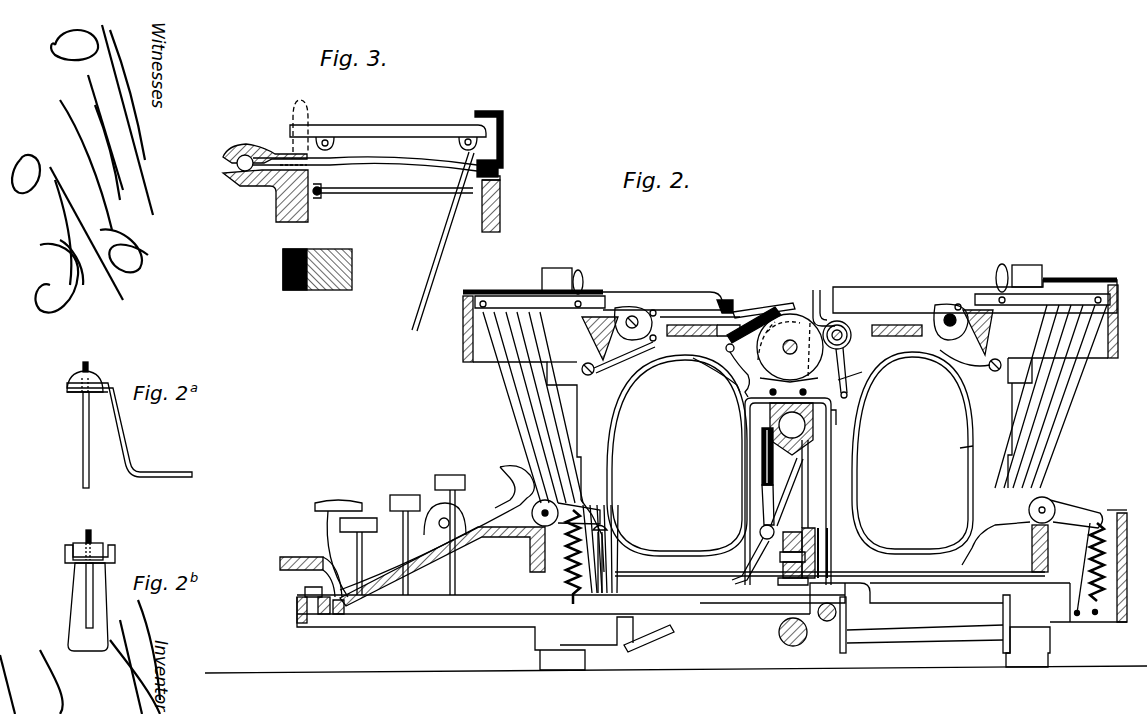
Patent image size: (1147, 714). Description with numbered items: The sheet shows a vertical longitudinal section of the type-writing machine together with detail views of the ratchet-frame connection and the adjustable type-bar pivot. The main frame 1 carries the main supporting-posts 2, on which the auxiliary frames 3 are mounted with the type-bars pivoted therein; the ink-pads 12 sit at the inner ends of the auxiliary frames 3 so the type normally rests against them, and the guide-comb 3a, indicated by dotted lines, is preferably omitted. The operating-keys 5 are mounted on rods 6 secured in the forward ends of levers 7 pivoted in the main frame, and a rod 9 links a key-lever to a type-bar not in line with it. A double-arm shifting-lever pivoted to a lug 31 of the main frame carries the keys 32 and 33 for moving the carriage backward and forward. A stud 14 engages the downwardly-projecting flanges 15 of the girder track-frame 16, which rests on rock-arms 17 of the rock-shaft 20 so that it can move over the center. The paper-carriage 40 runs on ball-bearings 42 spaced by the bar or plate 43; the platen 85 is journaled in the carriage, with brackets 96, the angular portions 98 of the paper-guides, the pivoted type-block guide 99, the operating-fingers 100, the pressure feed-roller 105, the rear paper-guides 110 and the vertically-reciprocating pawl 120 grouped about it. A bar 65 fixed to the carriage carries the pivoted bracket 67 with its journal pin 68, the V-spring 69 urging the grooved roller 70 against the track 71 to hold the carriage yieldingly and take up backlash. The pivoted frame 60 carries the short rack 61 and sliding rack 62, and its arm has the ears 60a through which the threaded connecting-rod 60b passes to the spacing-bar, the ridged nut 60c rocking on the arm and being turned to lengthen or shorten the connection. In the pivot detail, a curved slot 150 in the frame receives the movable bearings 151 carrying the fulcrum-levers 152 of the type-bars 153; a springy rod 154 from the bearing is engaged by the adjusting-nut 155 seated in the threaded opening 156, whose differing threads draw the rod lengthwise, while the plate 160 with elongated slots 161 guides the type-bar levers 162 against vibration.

In FIG. 2, the main frame 1 is at (560, 650).
In FIG. 2, the main supporting-posts 2 is at (566, 407).
In FIG. 3, the auxiliary frame 3 is at (262, 180).
In FIG. 2, the auxiliary frame 3 is at (667, 300).
In FIG. 3, the guide-comb 3a is at (299, 104).
In FIG. 2, the guide-comb 3a is at (1001, 270).
In FIG. 2, the operating-keys 5 is at (440, 478).
In FIG. 2, the rods 6 is at (355, 572).
In FIG. 2, the levers 7 is at (712, 607).
In FIG. 2, the rod 9 is at (612, 522).
In FIG. 2, the ink-pads 12 is at (680, 337).
In FIG. 2, the stud 14 is at (753, 392).
In FIG. 2, the downwardly-projecting flanges 15 is at (853, 432).
In FIG. 2, the girder track-frame 16 is at (800, 460).
In FIG. 2, the rock-arms 17 is at (810, 480).
In FIG. 2, the rock-shaft 20 is at (793, 646).
In FIG. 2, the lug 31 is at (435, 545).
In FIG. 2, the key 32 is at (335, 500).
In FIG. 2, the key 33 is at (392, 540).
In FIG. 2, the paper-carriage 40 is at (765, 412).
In FIG. 2, the ball-bearings 42 is at (779, 428).
In FIG. 2, the bar or plate 43 is at (848, 397).
In FIG. 2A, the pivoted frame 60 is at (180, 474).
In FIG. 2B, the pivoted frame 60 is at (93, 645).
In FIG. 2, the pivoted frame 60 is at (746, 556).
In FIG. 2A, the upwardly-bent ears or lugs 60a is at (100, 380).
In FIG. 2B, the upwardly-bent ears or lugs 60a is at (140, 534).
In FIG. 2, the upwardly-bent ears or lugs 60a is at (607, 530).
In FIG. 2A, the threaded connecting-rod 60b is at (82, 473).
In FIG. 2B, the threaded connecting-rod 60b is at (85, 605).
In FIG. 2, the threaded connecting-rod 60b is at (603, 552).
In FIG. 2A, the nut 60c is at (72, 380).
In FIG. 2B, the nut 60c is at (96, 545).
In FIG. 2, the short rack 61 is at (760, 450).
In FIG. 2, the second sliding short rack 62 is at (762, 482).
In FIG. 2, the bar 65 is at (829, 521).
In FIG. 2, the bracket 67 is at (808, 578).
In FIG. 2, the journal pin or screw 68 is at (790, 578).
In FIG. 2, the V-spring 69 is at (817, 556).
In FIG. 2, the grooved roller 70 is at (790, 580).
In FIG. 2, the track 71 is at (803, 532).
In FIG. 2, the main paper-platen 85 is at (790, 348).
In FIG. 2, the brackets 96 is at (752, 368).
In FIG. 2, the angular portions 98 is at (700, 386).
In FIG. 2, the pivoted type-block guide 99 is at (763, 297).
In FIG. 2, the operating-fingers 100 is at (777, 308).
In FIG. 2, the pressure feed-roller 105 is at (848, 325).
In FIG. 2, the rear paper-guides 110 is at (966, 447).
In FIG. 2, the vertically-reciprocating pawl 120 is at (824, 300).
In FIG. 3, the curved slot 150 is at (237, 164).
In FIG. 3, the movable bearings 151 is at (244, 150).
In FIG. 3, the fulcrum-levers 152 is at (320, 138).
In FIG. 3, the type-bars 153 is at (390, 125).
In FIG. 3, the springy rod 154 is at (383, 165).
In FIG. 3, the adjusting-nut 155 is at (499, 162).
In FIG. 3, the threaded opening 156 is at (497, 172).
In FIG. 3, the plate 160 is at (319, 199).
In FIG. 3, the elongated slots 161 is at (372, 195).
In FIG. 3, the type-bar levers 162 is at (443, 262).